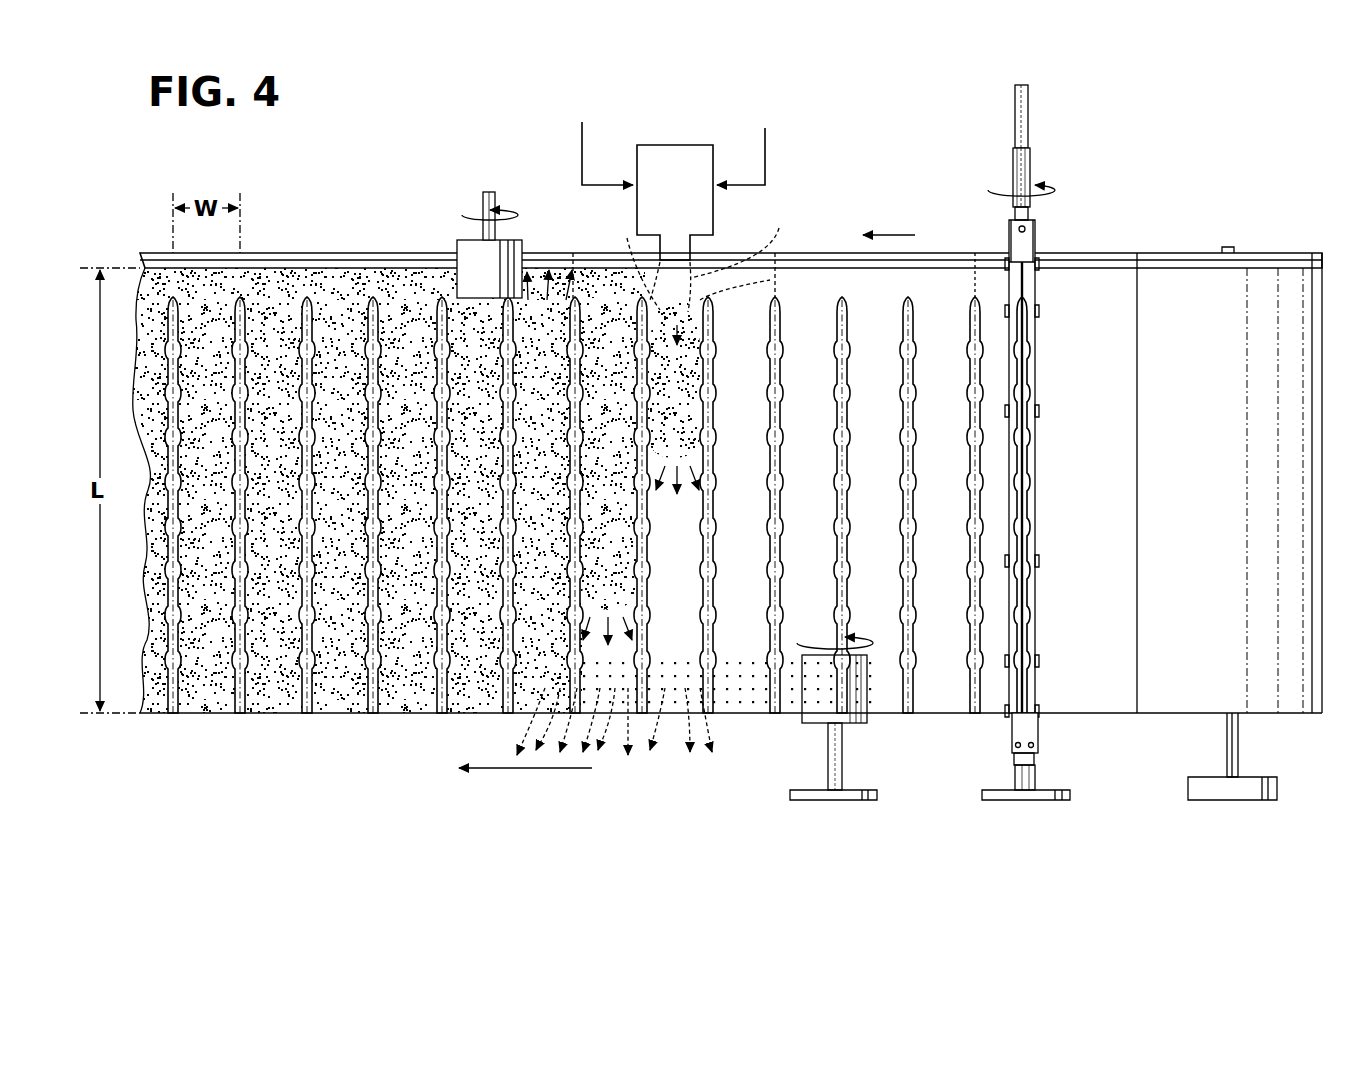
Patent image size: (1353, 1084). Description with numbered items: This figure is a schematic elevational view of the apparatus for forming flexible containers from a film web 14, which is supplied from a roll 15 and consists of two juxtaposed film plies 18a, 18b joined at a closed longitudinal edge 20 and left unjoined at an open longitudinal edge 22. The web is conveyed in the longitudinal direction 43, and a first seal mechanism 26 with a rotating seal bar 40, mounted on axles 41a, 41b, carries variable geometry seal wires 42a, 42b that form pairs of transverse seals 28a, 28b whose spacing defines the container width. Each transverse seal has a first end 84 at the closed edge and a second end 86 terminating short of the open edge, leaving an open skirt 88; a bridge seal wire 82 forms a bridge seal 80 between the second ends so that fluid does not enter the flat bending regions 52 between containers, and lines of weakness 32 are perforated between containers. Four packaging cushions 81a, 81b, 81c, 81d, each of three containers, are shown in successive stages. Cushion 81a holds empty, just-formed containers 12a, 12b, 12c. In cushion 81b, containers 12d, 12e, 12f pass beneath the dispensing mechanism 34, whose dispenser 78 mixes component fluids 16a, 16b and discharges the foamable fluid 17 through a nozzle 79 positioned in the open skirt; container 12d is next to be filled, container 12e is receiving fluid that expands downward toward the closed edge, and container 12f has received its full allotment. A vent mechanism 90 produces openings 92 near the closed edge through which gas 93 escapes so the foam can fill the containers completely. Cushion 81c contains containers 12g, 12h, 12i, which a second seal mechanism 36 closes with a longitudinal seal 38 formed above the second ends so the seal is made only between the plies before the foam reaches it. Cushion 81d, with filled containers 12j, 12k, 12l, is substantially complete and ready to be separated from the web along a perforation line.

The container 12a is at (923, 466).
The container 12b is at (856, 469).
The container 12c is at (790, 472).
The container 12d is at (721, 474).
The container 12e is at (656, 559).
The container 12f is at (592, 517).
The container 12g is at (521, 557).
The container 12h is at (453, 514).
The container 12i is at (390, 560).
The container 12j is at (322, 517).
The container 12k is at (252, 557).
The container 12l is at (190, 517).
The film web 14 is at (1077, 497).
The roll 15 is at (1193, 447).
The component fluid 16a is at (767, 150).
The component fluid 16b is at (580, 140).
The fluid 17 is at (676, 423).
The film ply 18a is at (1115, 282).
The film ply 18b is at (1118, 252).
The closed longitudinal edge 20 is at (1093, 713).
The open longitudinal edge 22 is at (1079, 250).
The first seal mechanism 26 is at (1024, 82).
The transverse seal 28a is at (972, 642).
The transverse seal 28b is at (915, 592).
The line of weakness 32 is at (372, 276).
The dispensing mechanism 34 is at (676, 142).
The second seal mechanism 36 is at (488, 190).
The longitudinal seal 38 is at (414, 276).
The seal bar 40 is at (1033, 545).
The axle 41a is at (1030, 118).
The axle 41b is at (1032, 773).
The seal wire 42a is at (1028, 375).
The seal wire 42b is at (1018, 457).
The longitudinal direction 43 is at (530, 769).
The bending region 52 is at (846, 350).
The dispenser 78 is at (685, 165).
The discharge nozzle 79 is at (742, 239).
The bridge seal 80 is at (975, 296).
The packaging cushion 81a is at (930, 250).
The packaging cushion 81b is at (772, 250).
The packaging cushion 81c is at (552, 250).
The packaging cushion 81d is at (306, 250).
The bridge seal wire 82 is at (1027, 308).
The first end 84 is at (930, 713).
The second end 86 is at (913, 302).
The open skirt 88 is at (710, 250).
The vent mechanism 90 is at (858, 735).
The opening 92 is at (766, 692).
The gas 93 is at (695, 740).